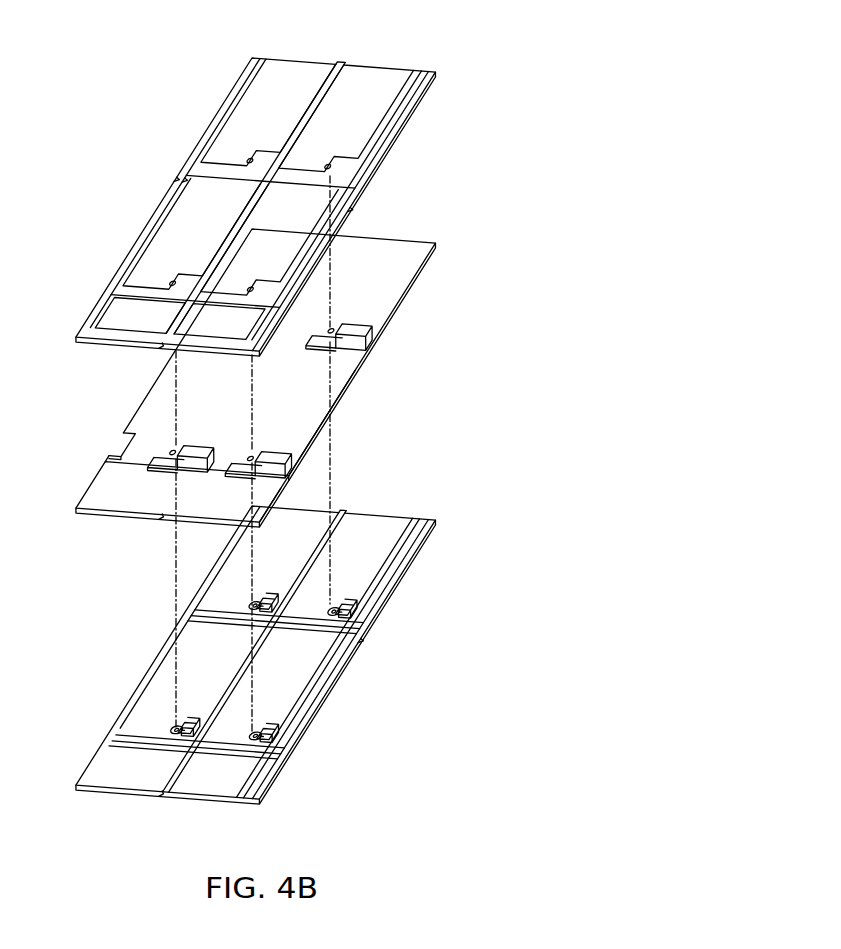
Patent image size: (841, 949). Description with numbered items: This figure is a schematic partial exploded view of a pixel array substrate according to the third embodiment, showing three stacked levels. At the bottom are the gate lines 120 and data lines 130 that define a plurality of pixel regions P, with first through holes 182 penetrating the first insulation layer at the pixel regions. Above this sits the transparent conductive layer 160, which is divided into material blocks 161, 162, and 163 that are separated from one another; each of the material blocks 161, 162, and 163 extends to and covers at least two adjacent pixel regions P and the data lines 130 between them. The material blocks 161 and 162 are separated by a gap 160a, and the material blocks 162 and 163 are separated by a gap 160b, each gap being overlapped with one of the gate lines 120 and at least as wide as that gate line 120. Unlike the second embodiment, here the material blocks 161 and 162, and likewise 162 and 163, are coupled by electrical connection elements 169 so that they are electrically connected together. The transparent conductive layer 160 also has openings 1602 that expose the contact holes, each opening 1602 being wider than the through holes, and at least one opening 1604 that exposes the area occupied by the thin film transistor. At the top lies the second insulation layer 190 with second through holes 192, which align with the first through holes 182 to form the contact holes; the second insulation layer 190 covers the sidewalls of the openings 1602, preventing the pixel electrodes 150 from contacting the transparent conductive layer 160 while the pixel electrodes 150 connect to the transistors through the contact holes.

The second insulation layer 190 is at (352, 210).
The second through hole 192 is at (338, 165).
The pixel electrode 150 is at (376, 108).
The transparent conductive layer 160 is at (257, 378).
The gap 160a is at (286, 479).
The gap 160b is at (365, 352).
The material block 161 is at (279, 497).
The material block 162 is at (343, 393).
The material block 163 is at (381, 330).
The opening 1602 is at (331, 331).
The opening 1604 is at (121, 456).
The electrical connection element 169 is at (142, 465).
The pixel region P is at (367, 556).
The gate line 120 is at (308, 622).
The data line 130 is at (148, 688).
The first through hole 182 is at (348, 613).